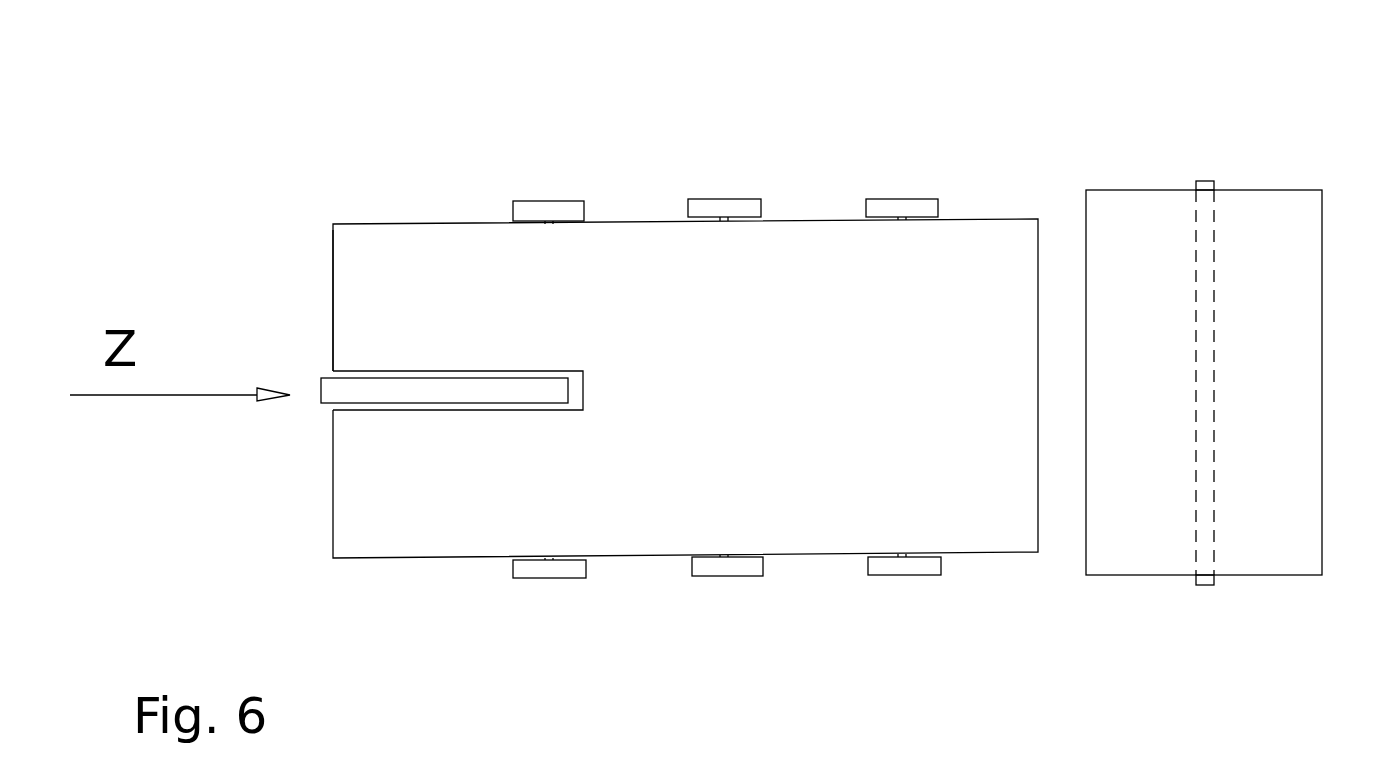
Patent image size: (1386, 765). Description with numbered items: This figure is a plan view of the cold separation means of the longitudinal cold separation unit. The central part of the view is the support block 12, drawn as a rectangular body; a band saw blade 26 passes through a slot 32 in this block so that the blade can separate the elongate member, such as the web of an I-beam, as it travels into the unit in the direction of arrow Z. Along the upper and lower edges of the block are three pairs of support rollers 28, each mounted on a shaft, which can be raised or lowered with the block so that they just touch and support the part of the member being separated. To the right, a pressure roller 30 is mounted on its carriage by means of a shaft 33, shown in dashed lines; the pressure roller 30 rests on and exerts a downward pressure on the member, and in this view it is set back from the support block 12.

The main body 12 is at (338, 188).
The saw blade 26 is at (328, 393).
The support rollers 28 is at (902, 212).
The pressure roller 30 is at (1124, 215).
The slot 32 is at (343, 356).
The shaft 33 is at (1207, 178).